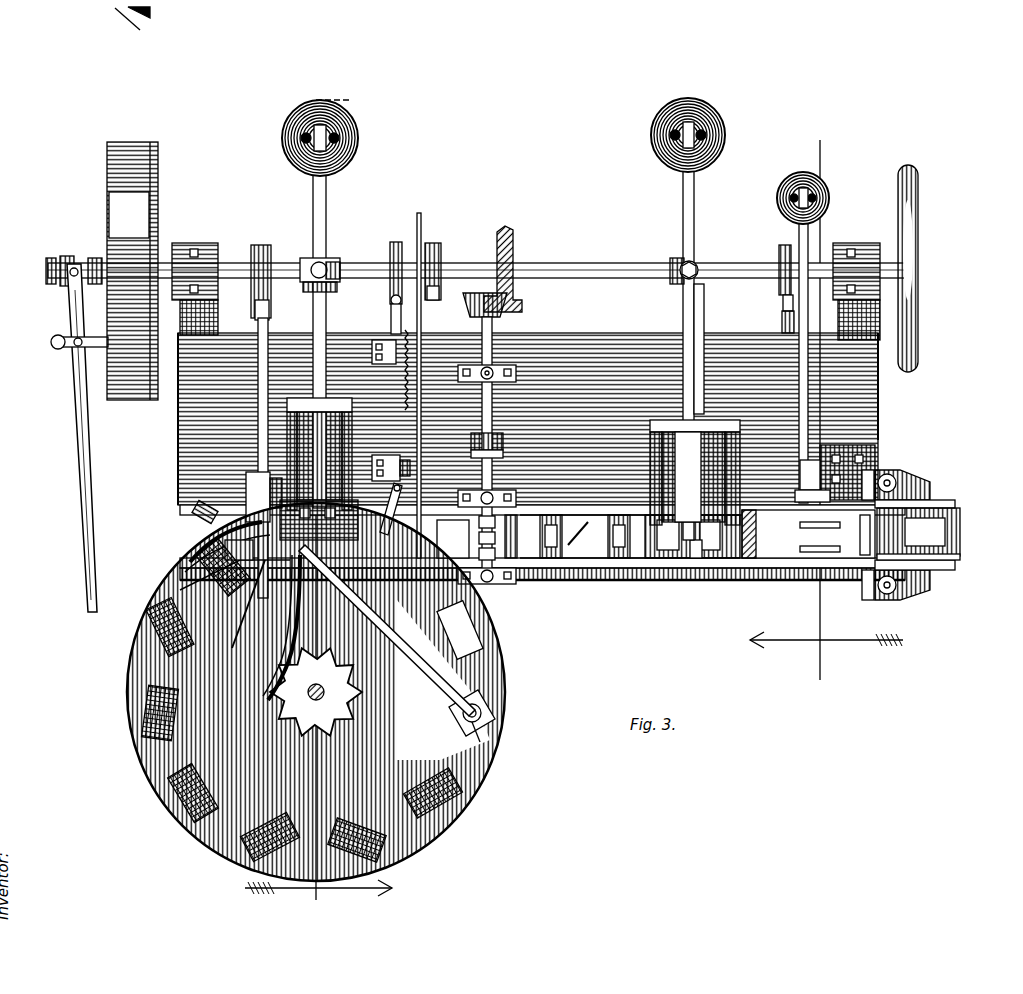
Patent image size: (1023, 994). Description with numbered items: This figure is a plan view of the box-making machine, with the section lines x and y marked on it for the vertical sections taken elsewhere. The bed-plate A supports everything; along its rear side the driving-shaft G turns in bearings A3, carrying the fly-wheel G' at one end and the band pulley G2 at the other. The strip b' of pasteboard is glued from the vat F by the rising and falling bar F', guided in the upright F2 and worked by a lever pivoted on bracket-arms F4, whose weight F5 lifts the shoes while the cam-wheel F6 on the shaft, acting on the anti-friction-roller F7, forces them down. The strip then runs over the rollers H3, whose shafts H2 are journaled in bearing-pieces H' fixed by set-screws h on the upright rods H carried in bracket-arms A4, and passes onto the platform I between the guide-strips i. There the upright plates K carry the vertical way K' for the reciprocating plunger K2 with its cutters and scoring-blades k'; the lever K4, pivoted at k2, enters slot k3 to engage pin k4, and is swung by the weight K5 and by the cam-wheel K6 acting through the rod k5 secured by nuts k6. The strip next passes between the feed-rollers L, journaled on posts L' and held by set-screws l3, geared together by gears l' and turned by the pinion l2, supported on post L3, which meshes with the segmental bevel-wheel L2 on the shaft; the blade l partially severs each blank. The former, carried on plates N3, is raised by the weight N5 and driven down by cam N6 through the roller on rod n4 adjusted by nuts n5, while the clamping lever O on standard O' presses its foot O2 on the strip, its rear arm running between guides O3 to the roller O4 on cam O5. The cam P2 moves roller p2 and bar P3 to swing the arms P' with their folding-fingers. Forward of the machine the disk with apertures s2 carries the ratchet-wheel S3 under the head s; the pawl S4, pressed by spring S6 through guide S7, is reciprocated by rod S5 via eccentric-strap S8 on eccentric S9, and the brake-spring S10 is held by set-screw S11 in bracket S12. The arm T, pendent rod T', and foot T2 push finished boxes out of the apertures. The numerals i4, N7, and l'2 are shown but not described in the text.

The section line x x is at (818, 409).
The section line y y is at (333, 507).
The bed-plate or table A is at (528, 419).
The platform I is at (618, 568).
The guide-strips i is at (580, 568).
The bed block i4 is at (572, 536).
The longitudinal blade l is at (630, 523).
The gears l' is at (583, 536).
The vertical way K' is at (692, 562).
The scoring-blades k' is at (692, 575).
The strip b' is at (808, 534).
The set-screw h is at (866, 600).
The driving-shaft G is at (477, 258).
The band pulley or wheel G2 is at (132, 259).
The bearings A3 is at (200, 258).
The eccentric-strap S8 is at (261, 245).
The eccentric S9 is at (273, 305).
The reciprocating rod S5 is at (258, 380).
The cam N6 is at (326, 228).
The weight N5 is at (356, 144).
The nuts n5 is at (310, 264).
The rod n4 is at (343, 256).
The collar N7 is at (330, 306).
The upright plates N3 is at (260, 445).
The cam P2 is at (396, 242).
The roller p2 is at (390, 300).
The reciprocating bar P3 is at (384, 319).
The upright guides O3 is at (421, 336).
The roller O4 is at (441, 262).
The cam O5 is at (445, 296).
The slot k3 is at (372, 350).
The pin k4 is at (410, 372).
The pivot k2 is at (384, 455).
The arms P' is at (395, 509).
The bevel-wheel L2 is at (513, 248).
The pinion l2 is at (506, 318).
The feed-rollers L is at (476, 448).
The post L3 is at (512, 364).
The set-screws l3 is at (498, 364).
The posts L' is at (496, 538).
The lever O is at (466, 438).
The standard O' is at (466, 457).
The foot O2 is at (449, 539).
The pillar l'2 is at (512, 502).
The cam-wheel K6 is at (683, 232).
The weight K5 is at (675, 135).
The nuts k6 is at (676, 262).
The rod k5 is at (698, 264).
The lever K4 is at (709, 349).
The reciprocating plunger K2 is at (740, 424).
The upright parallel plates K is at (691, 477).
The glue-containing vat or tank F is at (817, 350).
The weight F5 is at (778, 205).
The cam-wheel F6 is at (779, 256).
The anti-friction-roller F7 is at (783, 300).
The bracket-arms F4 is at (782, 322).
The upright F2 is at (826, 448).
The rising and falling bar F' is at (812, 497).
The fly-wheel G' is at (922, 268).
The bracket-arms A4 is at (876, 478).
The upright parallel rods H is at (904, 536).
The bearing-pieces H' is at (920, 536).
The shafts H2 is at (960, 510).
The rollers H3 is at (960, 560).
The set-screw S11 is at (195, 506).
The bracket S12 is at (205, 540).
The brake-spring S10 is at (190, 552).
The guide S7 is at (215, 548).
The arm T is at (316, 692).
The rectangular apertures s2 is at (145, 718).
The ratchet-wheel S3 is at (352, 706).
The head s is at (323, 690).
The pawl S4 is at (262, 628).
The spring S6 is at (246, 604).
The pendent rod T' is at (416, 640).
The foot T2 is at (482, 740).